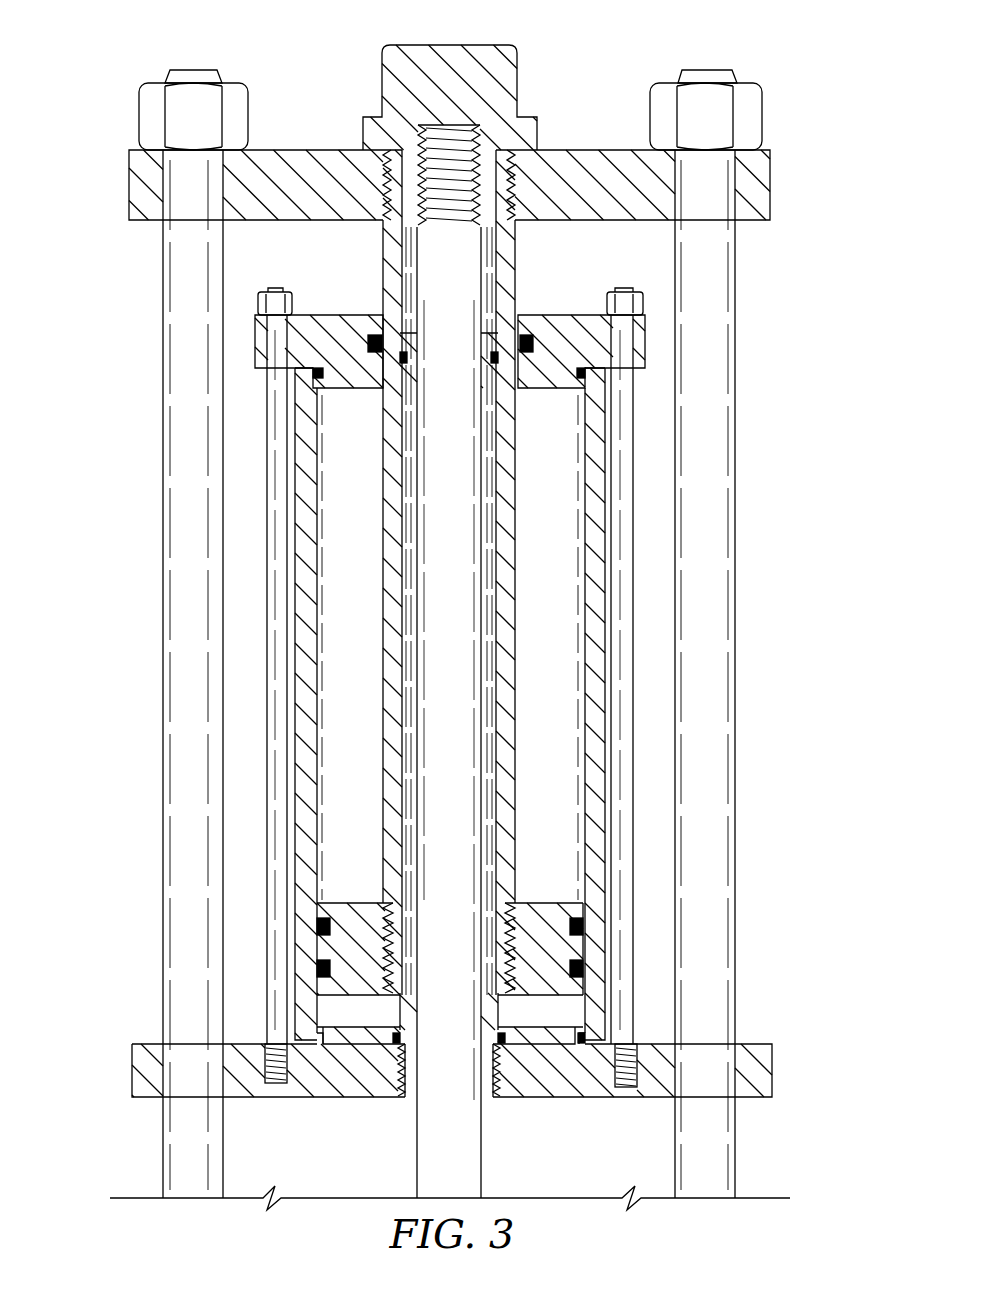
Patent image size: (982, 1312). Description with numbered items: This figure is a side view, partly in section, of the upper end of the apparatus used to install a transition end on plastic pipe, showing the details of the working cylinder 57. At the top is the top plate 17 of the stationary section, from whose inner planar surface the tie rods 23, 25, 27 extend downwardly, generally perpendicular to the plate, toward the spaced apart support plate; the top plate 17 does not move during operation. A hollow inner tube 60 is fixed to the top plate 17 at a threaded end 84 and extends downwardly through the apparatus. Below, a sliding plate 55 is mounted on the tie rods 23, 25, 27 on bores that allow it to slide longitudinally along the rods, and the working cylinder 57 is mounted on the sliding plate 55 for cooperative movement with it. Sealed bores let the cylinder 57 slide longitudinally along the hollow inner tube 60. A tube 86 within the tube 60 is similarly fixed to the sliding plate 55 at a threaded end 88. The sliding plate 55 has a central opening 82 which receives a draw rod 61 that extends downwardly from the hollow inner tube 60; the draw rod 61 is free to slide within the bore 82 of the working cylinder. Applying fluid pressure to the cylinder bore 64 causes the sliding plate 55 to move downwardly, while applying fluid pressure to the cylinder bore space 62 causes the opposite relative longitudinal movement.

The top plate 17 is at (130, 183).
The threaded end 84 is at (514, 185).
The hollow inner tube 60 is at (384, 266).
The tube within the tube 86 is at (500, 625).
The draw rod 61 is at (483, 1145).
The tie rod 27 is at (556, 316).
The cylinder bore space 62 is at (572, 548).
The working cylinder 57 is at (606, 470).
The threaded end 88 is at (398, 1078).
The cylinder bore 64 is at (578, 1040).
The sliding plate 55 is at (131, 1085).
The central opening 82 is at (412, 1078).
The tie rod 25 is at (163, 333).
The tie rod 23 is at (736, 410).